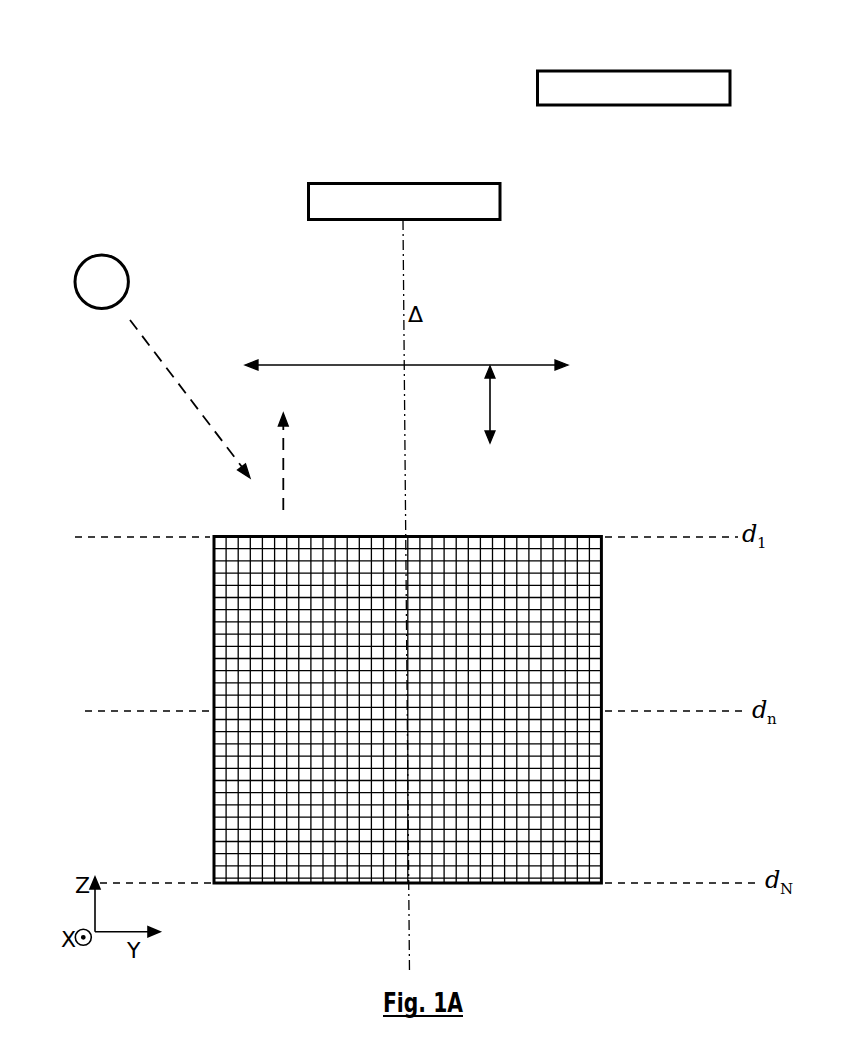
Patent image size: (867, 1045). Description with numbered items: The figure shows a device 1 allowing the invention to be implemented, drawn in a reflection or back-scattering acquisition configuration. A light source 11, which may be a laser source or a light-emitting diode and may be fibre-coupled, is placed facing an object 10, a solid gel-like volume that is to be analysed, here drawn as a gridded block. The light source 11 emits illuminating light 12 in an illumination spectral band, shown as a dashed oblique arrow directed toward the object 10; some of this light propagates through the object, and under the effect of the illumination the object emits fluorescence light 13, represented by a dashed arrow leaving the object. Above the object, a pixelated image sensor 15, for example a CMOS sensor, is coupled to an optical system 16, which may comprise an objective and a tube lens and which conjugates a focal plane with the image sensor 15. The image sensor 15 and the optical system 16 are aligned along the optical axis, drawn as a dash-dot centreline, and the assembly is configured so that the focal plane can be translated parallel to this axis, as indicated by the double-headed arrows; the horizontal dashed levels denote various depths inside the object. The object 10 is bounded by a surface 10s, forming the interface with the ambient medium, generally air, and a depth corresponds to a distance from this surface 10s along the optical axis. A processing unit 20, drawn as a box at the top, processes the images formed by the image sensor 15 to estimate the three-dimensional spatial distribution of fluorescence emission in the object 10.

The device 1 is at (163, 185).
The object 10 is at (432, 670).
The surface 10s is at (512, 525).
The light source 11 is at (93, 268).
The illuminating light 12 is at (175, 348).
The fluorescence light 13 is at (305, 458).
The pixelated image sensor 15 is at (495, 190).
The optical system 16 is at (570, 340).
The processing unit 20 is at (680, 80).